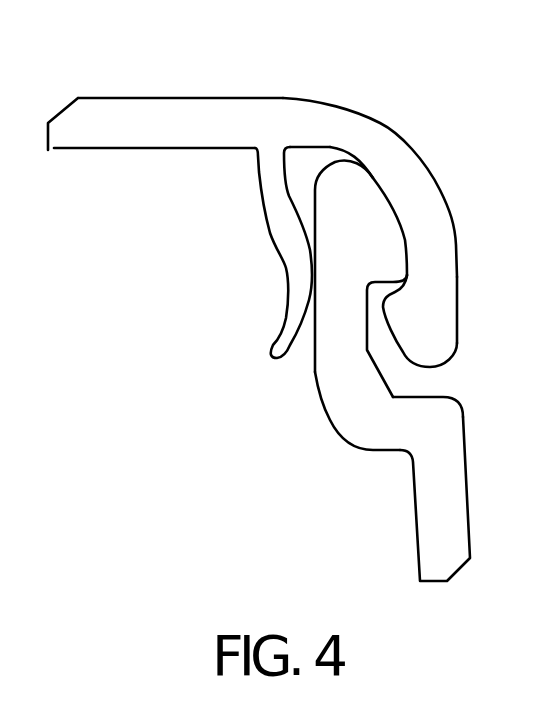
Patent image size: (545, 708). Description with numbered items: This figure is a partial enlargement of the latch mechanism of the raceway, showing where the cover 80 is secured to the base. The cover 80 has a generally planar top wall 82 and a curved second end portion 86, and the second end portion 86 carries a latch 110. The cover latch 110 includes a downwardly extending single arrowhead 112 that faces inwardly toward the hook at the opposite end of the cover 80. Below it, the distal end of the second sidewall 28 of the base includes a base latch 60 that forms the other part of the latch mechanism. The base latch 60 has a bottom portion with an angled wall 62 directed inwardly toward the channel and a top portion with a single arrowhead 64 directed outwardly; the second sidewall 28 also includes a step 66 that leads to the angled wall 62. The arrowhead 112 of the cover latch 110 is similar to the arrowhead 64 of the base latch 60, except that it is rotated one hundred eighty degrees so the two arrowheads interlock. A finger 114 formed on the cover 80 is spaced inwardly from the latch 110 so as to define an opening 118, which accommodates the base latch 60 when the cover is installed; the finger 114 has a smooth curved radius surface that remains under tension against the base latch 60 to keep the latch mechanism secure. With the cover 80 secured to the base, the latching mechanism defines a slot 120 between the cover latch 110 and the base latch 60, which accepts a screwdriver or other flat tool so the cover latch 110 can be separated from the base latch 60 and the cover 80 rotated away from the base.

The second sidewall 28 is at (460, 523).
The latch 60 is at (303, 354).
The angled wall 62 is at (360, 407).
The single arrowhead 64 is at (353, 208).
The step 66 is at (428, 420).
The cover 80 is at (98, 98).
The top wall 82 is at (118, 137).
The second end portion 86 is at (444, 195).
The latch 110 is at (437, 260).
The single arrowhead 112 is at (423, 317).
The finger 114 is at (298, 275).
The opening 118 is at (298, 160).
The slot 120 is at (418, 378).